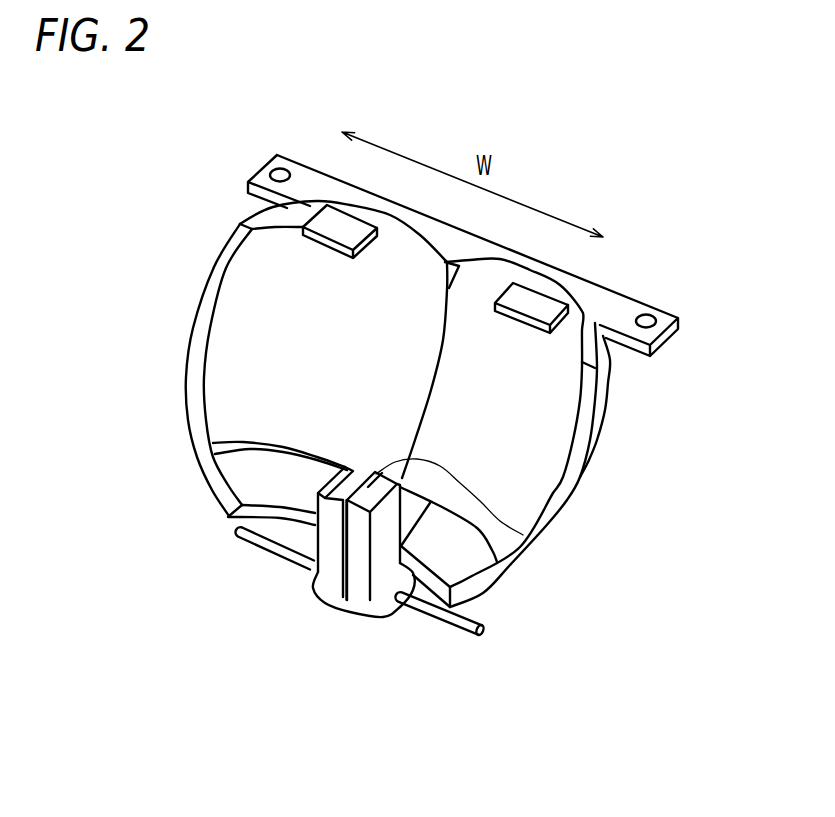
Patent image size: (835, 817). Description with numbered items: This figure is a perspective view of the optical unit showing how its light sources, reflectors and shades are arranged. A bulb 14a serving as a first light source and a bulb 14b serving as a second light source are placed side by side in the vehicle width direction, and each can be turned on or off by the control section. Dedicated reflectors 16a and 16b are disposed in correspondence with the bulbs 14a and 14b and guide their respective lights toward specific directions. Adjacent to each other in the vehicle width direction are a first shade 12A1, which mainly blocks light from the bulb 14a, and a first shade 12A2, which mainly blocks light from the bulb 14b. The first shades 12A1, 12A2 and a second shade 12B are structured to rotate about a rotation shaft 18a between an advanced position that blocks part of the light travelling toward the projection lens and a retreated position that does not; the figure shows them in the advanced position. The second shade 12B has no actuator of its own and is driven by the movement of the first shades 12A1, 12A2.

The first shade 12A1 is at (330, 537).
The first shade 12A2 is at (386, 561).
The second shade 12B is at (523, 535).
The bulb 14a is at (330, 226).
The bulb 14b is at (545, 306).
The reflector 16a is at (260, 363).
The reflector 16b is at (537, 447).
The rotation shaft 18a is at (468, 625).